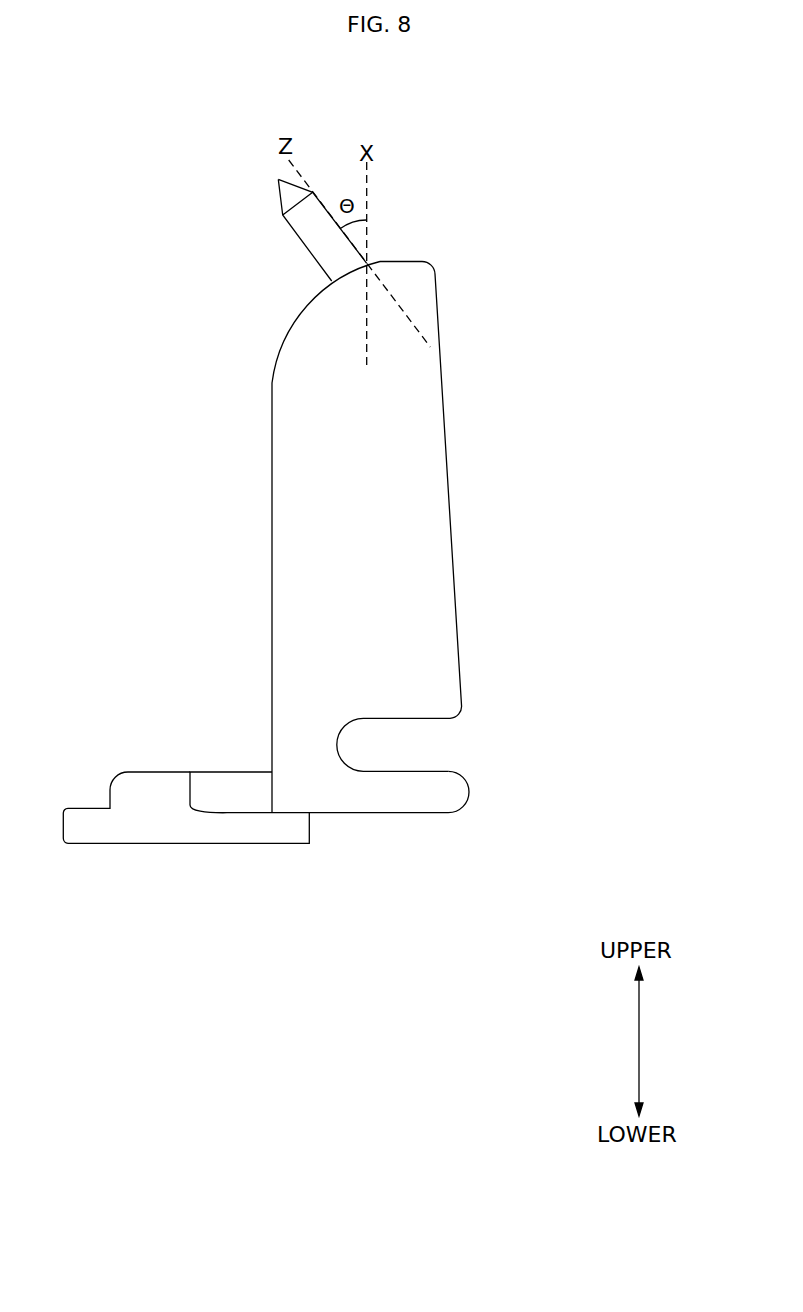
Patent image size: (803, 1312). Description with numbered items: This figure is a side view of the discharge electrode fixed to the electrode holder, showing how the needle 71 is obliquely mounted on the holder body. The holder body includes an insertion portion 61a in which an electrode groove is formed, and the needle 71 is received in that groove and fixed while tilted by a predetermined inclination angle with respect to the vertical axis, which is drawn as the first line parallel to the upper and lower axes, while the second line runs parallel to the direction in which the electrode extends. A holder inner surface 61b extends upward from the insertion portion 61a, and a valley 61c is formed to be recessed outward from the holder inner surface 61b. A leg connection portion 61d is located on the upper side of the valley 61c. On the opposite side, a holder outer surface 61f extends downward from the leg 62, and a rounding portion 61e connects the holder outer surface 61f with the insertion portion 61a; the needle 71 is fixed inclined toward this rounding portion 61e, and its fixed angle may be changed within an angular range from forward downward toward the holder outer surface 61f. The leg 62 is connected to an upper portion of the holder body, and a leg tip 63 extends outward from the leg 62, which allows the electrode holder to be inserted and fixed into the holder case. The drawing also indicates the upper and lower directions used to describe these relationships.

The needle 71 is at (313, 230).
The insertion portion 61a is at (407, 262).
The holder inner surface 61b is at (449, 503).
The valley 61c is at (420, 719).
The leg connection portion 61d is at (398, 815).
The rounding portion 61e is at (292, 327).
The holder outer surface 61f is at (272, 490).
The leg 62 is at (235, 793).
The leg tip 63 is at (92, 823).